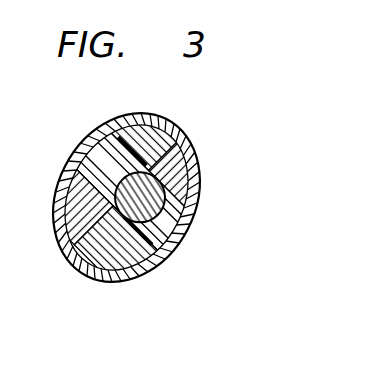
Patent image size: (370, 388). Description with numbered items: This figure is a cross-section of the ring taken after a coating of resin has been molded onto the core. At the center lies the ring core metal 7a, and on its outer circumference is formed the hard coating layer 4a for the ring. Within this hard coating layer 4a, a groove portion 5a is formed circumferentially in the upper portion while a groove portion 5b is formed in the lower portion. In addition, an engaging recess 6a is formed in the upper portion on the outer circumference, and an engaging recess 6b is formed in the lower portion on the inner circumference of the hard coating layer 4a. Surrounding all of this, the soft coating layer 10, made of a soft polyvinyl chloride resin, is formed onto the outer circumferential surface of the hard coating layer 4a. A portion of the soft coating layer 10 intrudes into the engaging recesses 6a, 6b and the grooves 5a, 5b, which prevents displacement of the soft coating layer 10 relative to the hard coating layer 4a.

The soft coating layer 10 is at (181, 128).
The hard coating layer for the ring 4a is at (88, 172).
The groove portion 5a is at (126, 142).
The groove portion 5b is at (141, 252).
The engaging recess 6a is at (186, 164).
The engaging recess 6b is at (62, 213).
The ring core metal 7a is at (195, 211).